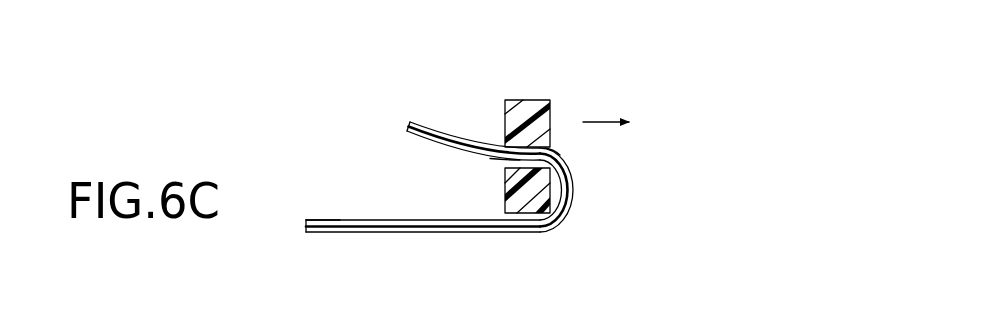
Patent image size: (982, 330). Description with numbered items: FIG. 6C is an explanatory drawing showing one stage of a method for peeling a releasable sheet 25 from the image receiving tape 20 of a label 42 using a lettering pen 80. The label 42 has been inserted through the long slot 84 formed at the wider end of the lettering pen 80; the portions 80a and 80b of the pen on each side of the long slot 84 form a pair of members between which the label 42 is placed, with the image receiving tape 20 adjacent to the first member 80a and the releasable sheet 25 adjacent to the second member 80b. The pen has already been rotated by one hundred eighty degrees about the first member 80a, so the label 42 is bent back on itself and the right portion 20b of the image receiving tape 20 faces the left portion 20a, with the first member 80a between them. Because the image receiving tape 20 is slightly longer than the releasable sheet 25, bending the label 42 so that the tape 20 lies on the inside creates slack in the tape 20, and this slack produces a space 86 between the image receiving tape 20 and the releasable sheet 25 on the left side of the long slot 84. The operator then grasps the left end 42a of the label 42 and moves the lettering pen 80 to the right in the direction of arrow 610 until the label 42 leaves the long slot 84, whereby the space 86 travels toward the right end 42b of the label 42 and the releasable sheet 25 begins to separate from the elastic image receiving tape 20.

The image receiving tape 20 is at (437, 142).
The left portion of the image receiving tape 20a is at (304, 219).
The right portion of the image receiving tape 20b is at (407, 131).
The releasable sheet 25 is at (573, 196).
The label 42 is at (430, 121).
The left end of the label 42a is at (291, 229).
The right end of the label 42b is at (393, 120).
The lettering pen 80 is at (539, 92).
The first member of the lettering pen 80a is at (525, 212).
The second member of the lettering pen 80b is at (538, 105).
The long slot 84 is at (553, 150).
The space 86 is at (500, 158).
The arrow 610 is at (605, 122).